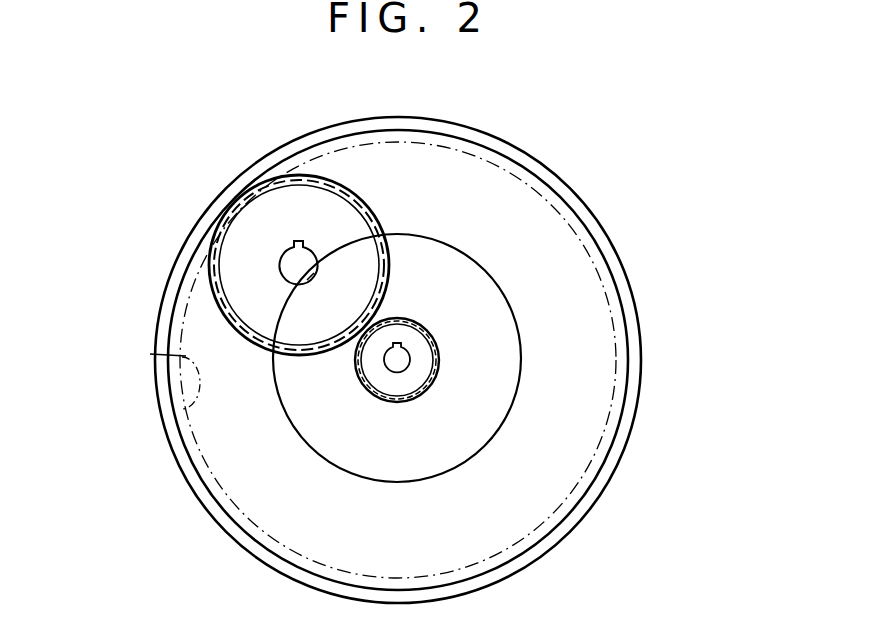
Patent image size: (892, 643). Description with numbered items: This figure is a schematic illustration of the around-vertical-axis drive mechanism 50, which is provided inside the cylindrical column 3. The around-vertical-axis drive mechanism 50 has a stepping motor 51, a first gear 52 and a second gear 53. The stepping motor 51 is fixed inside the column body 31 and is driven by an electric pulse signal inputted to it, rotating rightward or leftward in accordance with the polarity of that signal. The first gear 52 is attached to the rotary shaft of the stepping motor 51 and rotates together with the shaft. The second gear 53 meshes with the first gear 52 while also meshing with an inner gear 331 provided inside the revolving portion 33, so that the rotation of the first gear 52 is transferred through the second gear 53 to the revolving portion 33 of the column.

The cylindrical column 3 is at (641, 149).
The column body 31 is at (604, 224).
The revolving portion 33 is at (398, 360).
The inner gear 331 is at (140, 352).
The around-vertical-axis drive mechanism 50 is at (508, 440).
The stepping motor 51 is at (497, 322).
The first gear 52 is at (388, 382).
The second gear 53 is at (322, 197).